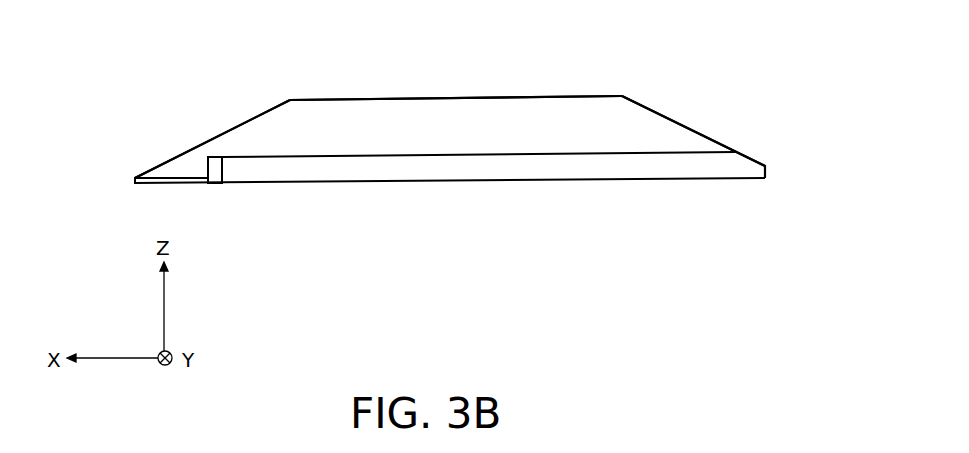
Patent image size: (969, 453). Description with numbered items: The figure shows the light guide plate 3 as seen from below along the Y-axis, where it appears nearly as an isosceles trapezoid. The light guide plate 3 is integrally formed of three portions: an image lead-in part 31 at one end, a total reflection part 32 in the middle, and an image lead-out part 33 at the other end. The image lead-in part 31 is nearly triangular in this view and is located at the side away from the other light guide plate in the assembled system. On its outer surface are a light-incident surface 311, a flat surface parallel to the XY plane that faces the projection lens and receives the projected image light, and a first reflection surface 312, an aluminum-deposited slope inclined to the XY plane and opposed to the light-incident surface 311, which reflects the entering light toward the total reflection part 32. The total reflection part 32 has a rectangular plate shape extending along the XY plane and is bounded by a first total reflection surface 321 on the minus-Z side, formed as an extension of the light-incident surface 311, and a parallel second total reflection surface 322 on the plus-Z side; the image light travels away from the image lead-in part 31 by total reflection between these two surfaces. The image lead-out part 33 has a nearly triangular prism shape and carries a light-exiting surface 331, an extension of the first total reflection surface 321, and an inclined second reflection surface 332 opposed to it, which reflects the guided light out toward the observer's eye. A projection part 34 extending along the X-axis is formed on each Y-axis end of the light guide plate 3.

The light guide plate 3 is at (120, 113).
The image lead-in part 31 is at (672, 125).
The light-incident surface 311 is at (697, 181).
The first reflection surface 312 is at (700, 130).
The total reflection part 32 is at (440, 112).
The first total reflection surface 321 is at (485, 181).
The second total reflection surface 322 is at (540, 97).
The image lead-out part 33 is at (248, 133).
The light-exiting surface 331 is at (216, 186).
The second reflection surface 332 is at (272, 105).
The projection part 34 is at (593, 170).